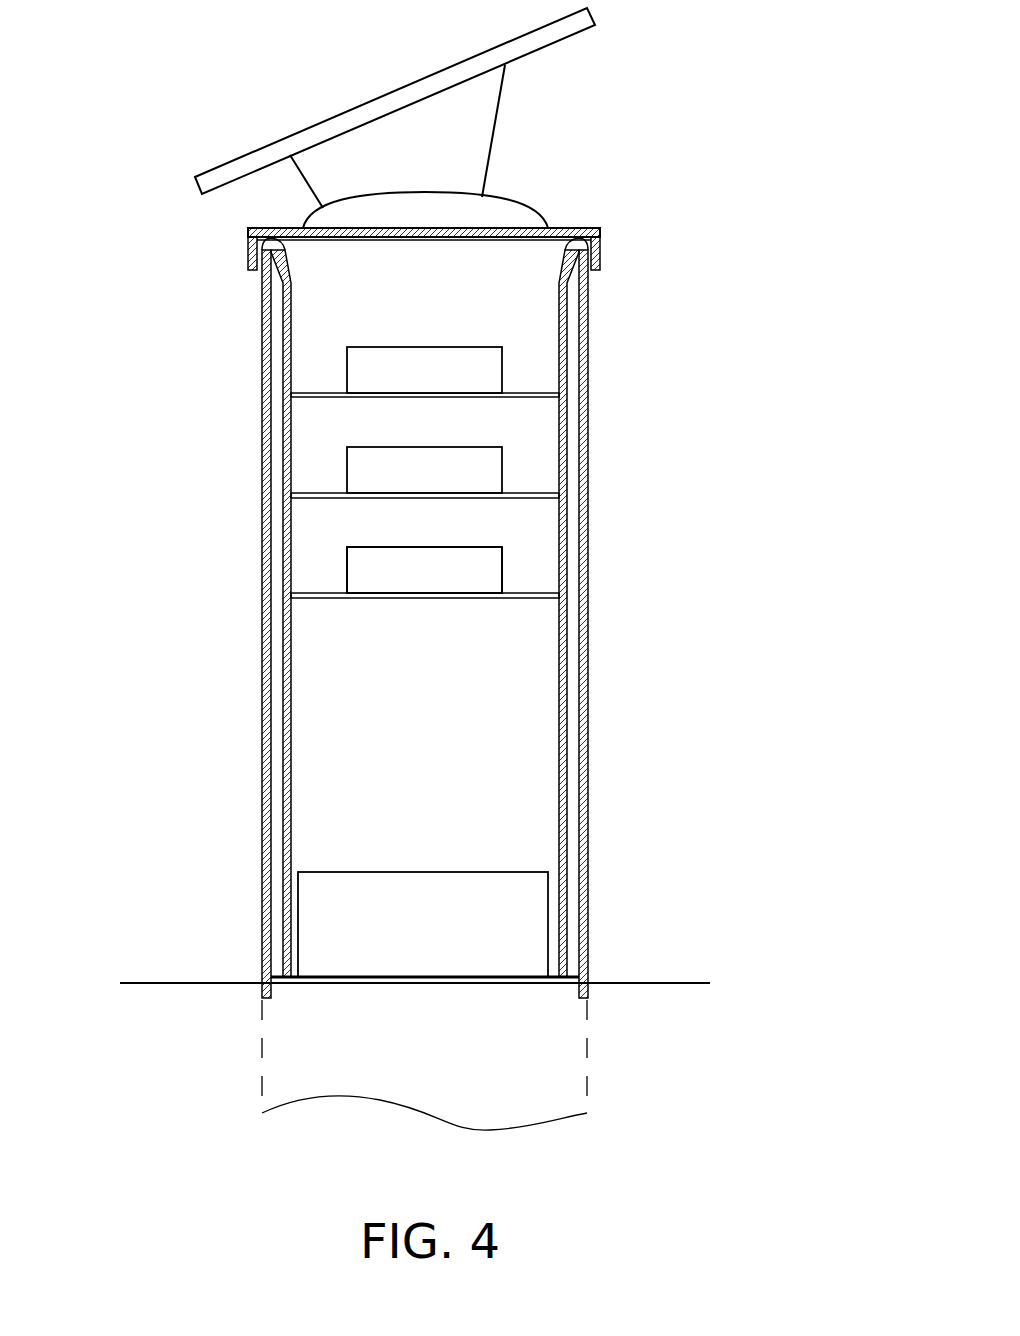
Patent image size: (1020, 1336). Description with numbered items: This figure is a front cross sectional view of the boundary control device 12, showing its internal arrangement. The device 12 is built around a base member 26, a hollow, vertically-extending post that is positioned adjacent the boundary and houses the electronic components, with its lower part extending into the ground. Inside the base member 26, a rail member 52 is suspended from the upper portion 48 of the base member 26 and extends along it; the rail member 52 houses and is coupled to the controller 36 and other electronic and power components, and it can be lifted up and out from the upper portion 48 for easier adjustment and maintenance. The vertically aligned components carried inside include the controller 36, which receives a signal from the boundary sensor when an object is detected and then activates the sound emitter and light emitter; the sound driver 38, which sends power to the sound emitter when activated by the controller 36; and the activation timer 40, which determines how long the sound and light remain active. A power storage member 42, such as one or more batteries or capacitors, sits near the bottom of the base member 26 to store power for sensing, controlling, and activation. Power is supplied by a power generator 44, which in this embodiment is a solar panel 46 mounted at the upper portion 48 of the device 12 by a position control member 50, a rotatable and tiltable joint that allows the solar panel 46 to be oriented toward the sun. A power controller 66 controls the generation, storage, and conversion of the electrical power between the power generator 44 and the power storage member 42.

The boundary control device 12 is at (714, 212).
The base member 26 is at (590, 537).
The controller 36 is at (368, 558).
The sound driver 38 is at (382, 470).
The activation timer 40 is at (370, 569).
The power storage member 42 is at (497, 928).
The power generator 44 is at (524, 74).
The solar panel 46 is at (580, 20).
The upper portion 48 is at (243, 302).
The position control member 50 is at (500, 180).
The rail member 52 is at (292, 665).
The power controller 66 is at (475, 370).